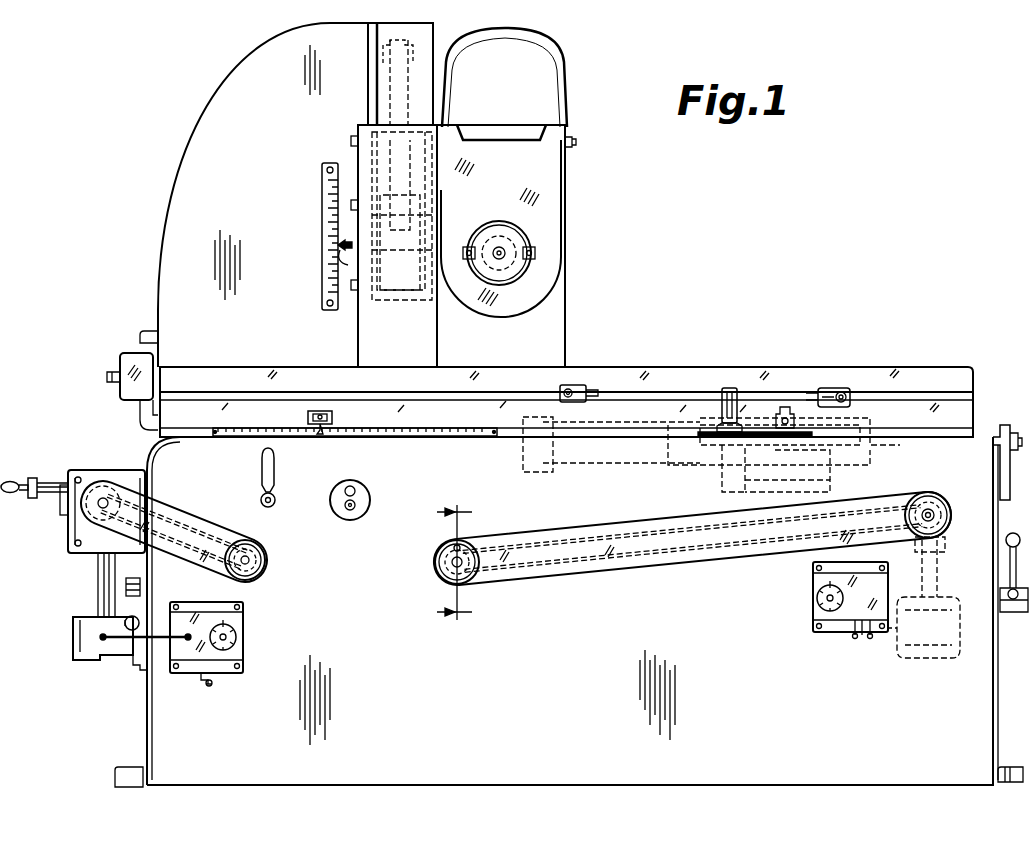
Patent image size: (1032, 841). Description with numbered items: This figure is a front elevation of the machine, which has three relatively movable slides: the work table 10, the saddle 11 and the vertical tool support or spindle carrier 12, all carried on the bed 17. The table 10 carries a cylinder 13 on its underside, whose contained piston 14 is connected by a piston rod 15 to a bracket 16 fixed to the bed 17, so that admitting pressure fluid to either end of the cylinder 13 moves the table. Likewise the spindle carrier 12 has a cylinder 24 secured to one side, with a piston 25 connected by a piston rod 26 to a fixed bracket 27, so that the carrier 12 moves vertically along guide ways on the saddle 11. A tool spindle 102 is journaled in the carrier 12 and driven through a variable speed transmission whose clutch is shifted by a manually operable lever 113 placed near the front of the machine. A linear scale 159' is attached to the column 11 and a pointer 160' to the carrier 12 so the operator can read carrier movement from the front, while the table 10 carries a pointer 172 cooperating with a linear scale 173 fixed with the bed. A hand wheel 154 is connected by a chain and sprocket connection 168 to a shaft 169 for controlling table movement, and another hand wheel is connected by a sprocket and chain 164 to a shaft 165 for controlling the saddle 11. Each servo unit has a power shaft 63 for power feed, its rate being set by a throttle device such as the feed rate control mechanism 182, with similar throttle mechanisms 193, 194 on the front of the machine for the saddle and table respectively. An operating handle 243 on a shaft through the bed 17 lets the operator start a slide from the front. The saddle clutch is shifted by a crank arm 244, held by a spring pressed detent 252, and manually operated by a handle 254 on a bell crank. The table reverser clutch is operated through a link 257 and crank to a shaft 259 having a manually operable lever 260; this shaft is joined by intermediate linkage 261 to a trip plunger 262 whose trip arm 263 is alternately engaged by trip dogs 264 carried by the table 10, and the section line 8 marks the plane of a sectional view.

The section line 8- 8 is at (444, 562).
The table 10 is at (828, 372).
The saddle 11 is at (166, 292).
The spindle carrier 12 is at (553, 170).
The cylinder 13 is at (535, 472).
The piston 14 is at (650, 462).
The piston rod 15 is at (880, 450).
The bracket 16 is at (1007, 476).
The bed 17 is at (978, 657).
The cylinder 24 is at (382, 298).
The piston 25 is at (400, 222).
The piston rod 26 is at (393, 88).
The fixed bracket 27 is at (388, 52).
The power shaft 63 is at (98, 598).
The tool spindle 102 is at (526, 240).
The manually operable lever 113 is at (1010, 565).
The hand wheel 154 is at (442, 580).
The linear scale 159' is at (303, 236).
The pointer 160' is at (378, 255).
The sprocket and chain 164 is at (183, 518).
The shaft 165 is at (78, 520).
The chain and sprocket connection 168 is at (683, 566).
The shaft 169 is at (932, 512).
The pointer 172 is at (334, 416).
The linear scale 173 is at (220, 438).
The feed rate control mechanism 182 is at (128, 354).
The throttle mechanism 193 is at (240, 655).
The throttle mechanism 194 is at (815, 613).
The operating handle 243 is at (262, 470).
The crank arm 244 is at (580, 385).
The spring pressed detent 252 is at (367, 496).
The manually operable handle 254 is at (140, 620).
The link 257 is at (834, 470).
The shaft 259 is at (790, 446).
The manually operable lever 260 is at (786, 407).
The intermediate linkage 261 is at (770, 490).
The trip plunger 262 is at (722, 475).
The trip arm 263 is at (720, 392).
The trip dogs 264 is at (850, 392).